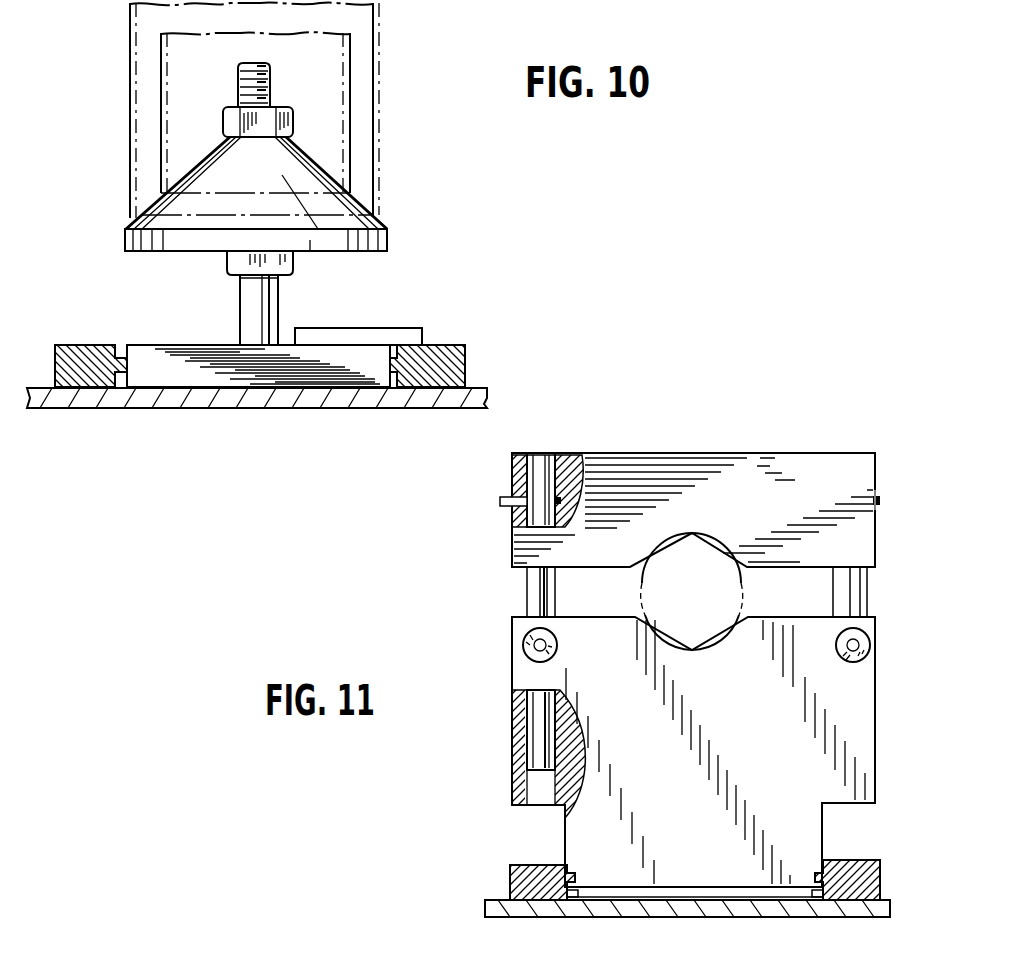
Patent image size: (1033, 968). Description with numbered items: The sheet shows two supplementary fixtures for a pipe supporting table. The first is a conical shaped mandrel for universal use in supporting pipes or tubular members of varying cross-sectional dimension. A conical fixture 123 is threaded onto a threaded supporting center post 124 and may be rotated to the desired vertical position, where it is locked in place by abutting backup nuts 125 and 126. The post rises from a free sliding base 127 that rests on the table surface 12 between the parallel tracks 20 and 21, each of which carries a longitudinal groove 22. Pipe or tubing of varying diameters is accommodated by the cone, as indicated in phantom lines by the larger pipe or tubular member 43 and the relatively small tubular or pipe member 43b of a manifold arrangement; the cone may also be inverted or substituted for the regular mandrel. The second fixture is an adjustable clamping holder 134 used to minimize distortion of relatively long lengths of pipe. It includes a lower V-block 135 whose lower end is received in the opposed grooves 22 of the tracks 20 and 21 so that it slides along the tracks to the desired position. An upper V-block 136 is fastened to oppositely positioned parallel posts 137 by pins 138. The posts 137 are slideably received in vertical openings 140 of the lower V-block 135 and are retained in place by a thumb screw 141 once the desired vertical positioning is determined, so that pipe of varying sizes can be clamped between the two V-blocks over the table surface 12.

In FIG. 10, the table surface 12 is at (288, 398).
In FIG. 11, the table surface 12 is at (690, 918).
In FIG. 10, the track 20 is at (66, 345).
In FIG. 11, the track 20 is at (515, 875).
In FIG. 10, the track 21 is at (457, 357).
In FIG. 11, the track 21 is at (860, 868).
In FIG. 11, the longitudinal groove 22 is at (564, 898).
In FIG. 10, the pipe or tubular member 43 is at (378, 103).
In FIG. 10, the small tubular or pipe member 43b is at (350, 55).
In FIG. 10, the conical fixture 123 is at (387, 245).
In FIG. 10, the threaded supporting center post 124 is at (246, 296).
In FIG. 10, the backup nut 125 is at (290, 118).
In FIG. 10, the backup nut 126 is at (295, 262).
In FIG. 10, the free sliding base 127 is at (202, 373).
In FIG. 11, the adjustable clamping holder 134 is at (667, 879).
In FIG. 11, the lower V-block 135 is at (703, 862).
In FIG. 11, the upper V-block 136 is at (740, 425).
In FIG. 11, the parallel post 137 is at (534, 585).
In FIG. 11, the pin 138 is at (500, 500).
In FIG. 11, the vertical opening 140 is at (535, 790).
In FIG. 11, the thumb screw 141 is at (528, 652).